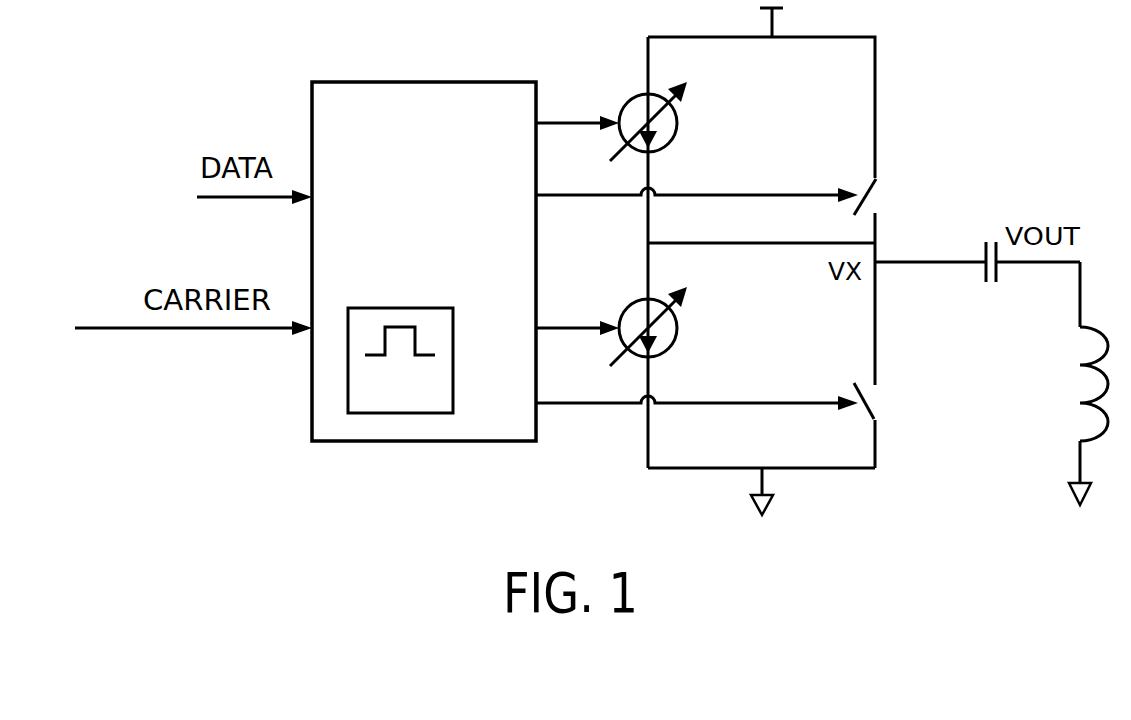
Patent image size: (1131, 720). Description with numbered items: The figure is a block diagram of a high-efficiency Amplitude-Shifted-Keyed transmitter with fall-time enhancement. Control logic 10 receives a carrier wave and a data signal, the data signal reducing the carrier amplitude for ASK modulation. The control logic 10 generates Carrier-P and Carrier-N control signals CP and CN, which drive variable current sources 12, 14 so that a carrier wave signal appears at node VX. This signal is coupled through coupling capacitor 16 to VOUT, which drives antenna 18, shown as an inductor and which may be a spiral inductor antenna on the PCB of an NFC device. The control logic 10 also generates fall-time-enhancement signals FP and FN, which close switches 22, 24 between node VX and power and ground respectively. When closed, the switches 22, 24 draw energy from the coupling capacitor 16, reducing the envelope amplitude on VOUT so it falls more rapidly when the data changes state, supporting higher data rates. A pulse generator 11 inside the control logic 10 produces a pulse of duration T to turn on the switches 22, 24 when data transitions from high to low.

The control logic 10 is at (446, 238).
The pulse generator 11 is at (409, 396).
The variable current source 12 is at (676, 133).
The variable current source 14 is at (676, 338).
The coupling capacitor 16 is at (985, 278).
The antenna 18 is at (1078, 368).
The switch 22 is at (878, 185).
The switch 24 is at (878, 396).